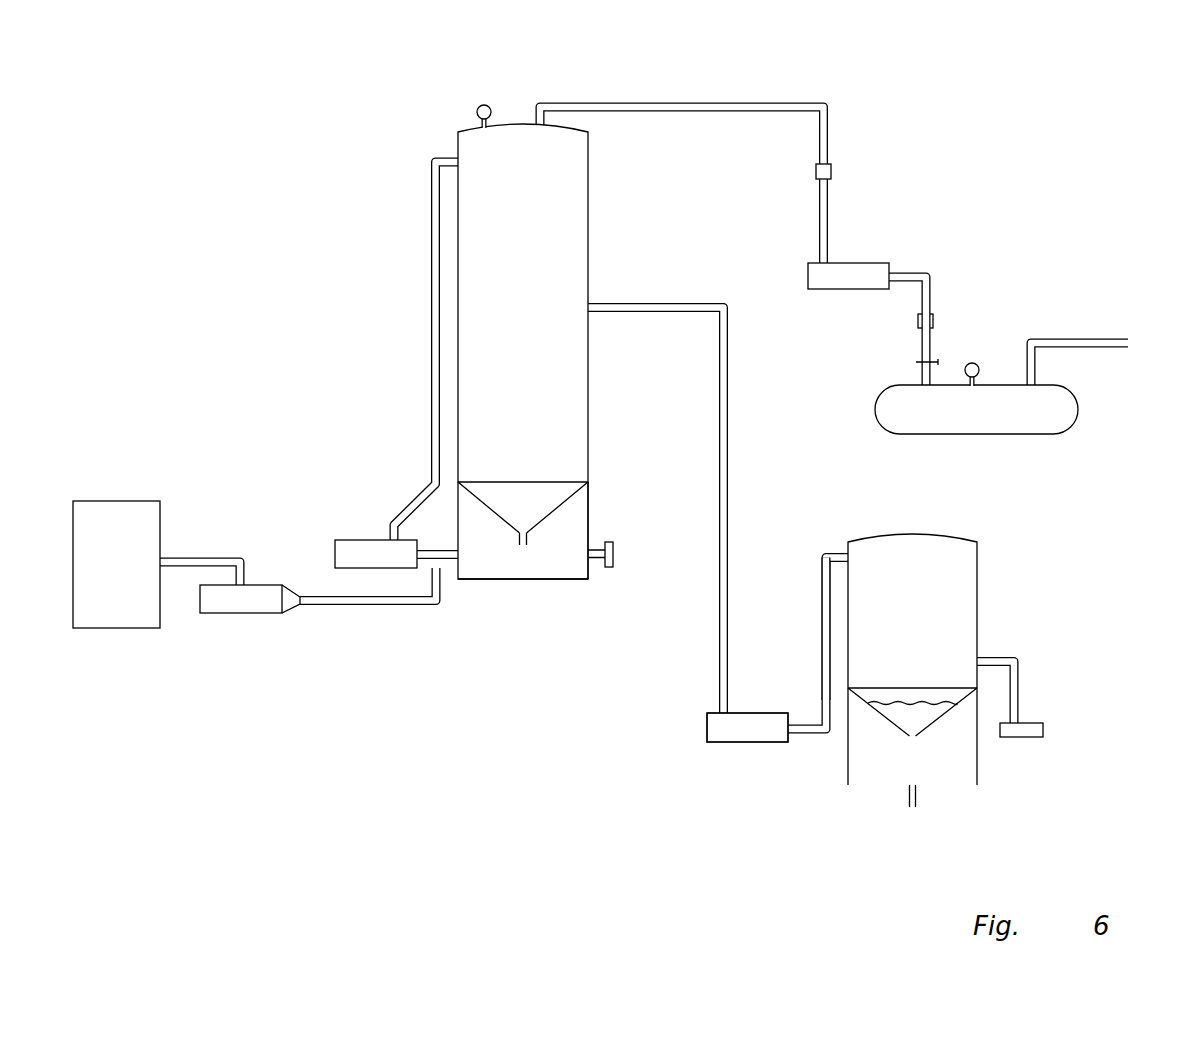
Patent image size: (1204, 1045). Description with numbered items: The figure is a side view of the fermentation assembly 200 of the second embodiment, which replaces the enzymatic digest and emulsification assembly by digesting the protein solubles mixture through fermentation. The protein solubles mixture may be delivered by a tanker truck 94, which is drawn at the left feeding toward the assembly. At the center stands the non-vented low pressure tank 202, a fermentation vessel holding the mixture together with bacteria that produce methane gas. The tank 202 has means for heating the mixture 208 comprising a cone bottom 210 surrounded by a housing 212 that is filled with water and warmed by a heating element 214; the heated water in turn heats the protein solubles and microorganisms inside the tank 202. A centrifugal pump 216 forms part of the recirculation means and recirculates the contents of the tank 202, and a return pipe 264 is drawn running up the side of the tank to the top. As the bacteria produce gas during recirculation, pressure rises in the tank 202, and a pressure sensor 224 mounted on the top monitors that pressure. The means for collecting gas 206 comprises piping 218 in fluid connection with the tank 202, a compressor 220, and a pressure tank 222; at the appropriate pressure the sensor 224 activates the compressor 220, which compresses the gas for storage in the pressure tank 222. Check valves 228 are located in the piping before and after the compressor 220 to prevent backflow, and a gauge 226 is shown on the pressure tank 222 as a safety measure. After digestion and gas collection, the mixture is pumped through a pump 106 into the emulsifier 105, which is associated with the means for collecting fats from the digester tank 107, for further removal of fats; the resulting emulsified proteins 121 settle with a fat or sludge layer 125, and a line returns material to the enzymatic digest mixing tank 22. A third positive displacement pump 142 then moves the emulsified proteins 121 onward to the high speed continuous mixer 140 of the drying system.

The tanker truck 94 is at (130, 500).
The emulsifier 105 is at (733, 742).
The pump 106 is at (747, 784).
The means for collecting fats from the digester tank 107 is at (980, 578).
The emulsified proteins 121 is at (822, 585).
The sludge 125 is at (890, 708).
The third positive displacement pump 142 is at (1025, 737).
The high speed continuous mixer 140 is at (1084, 730).
The enzymatic digest mixing tank 22 is at (912, 808).
The fermentation assembly 200 is at (588, 830).
The non-vented low pressure tank 202 is at (588, 208).
The means for collecting gas 206 is at (828, 135).
The means for heating the mixture 208 is at (536, 560).
The cone bottom 210 is at (492, 505).
The housing 212 is at (580, 538).
The heating element 214 is at (608, 567).
The centrifugal pump 216 is at (357, 540).
The piping 218 is at (736, 107).
The compressor 220 is at (860, 262).
The pressure tank 222 is at (990, 434).
The pressure sensor 224 is at (481, 106).
The valve 226 is at (975, 362).
The check valve 228 is at (833, 172).
The recirculation pipe 264 is at (432, 197).